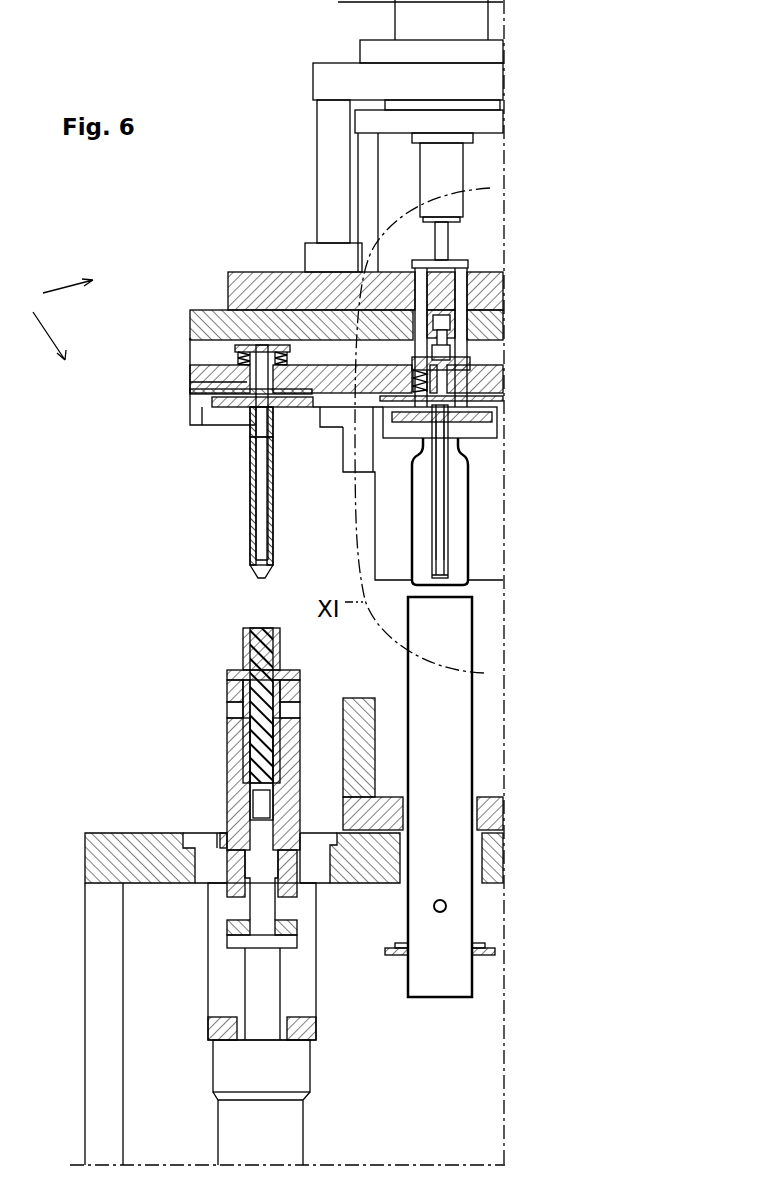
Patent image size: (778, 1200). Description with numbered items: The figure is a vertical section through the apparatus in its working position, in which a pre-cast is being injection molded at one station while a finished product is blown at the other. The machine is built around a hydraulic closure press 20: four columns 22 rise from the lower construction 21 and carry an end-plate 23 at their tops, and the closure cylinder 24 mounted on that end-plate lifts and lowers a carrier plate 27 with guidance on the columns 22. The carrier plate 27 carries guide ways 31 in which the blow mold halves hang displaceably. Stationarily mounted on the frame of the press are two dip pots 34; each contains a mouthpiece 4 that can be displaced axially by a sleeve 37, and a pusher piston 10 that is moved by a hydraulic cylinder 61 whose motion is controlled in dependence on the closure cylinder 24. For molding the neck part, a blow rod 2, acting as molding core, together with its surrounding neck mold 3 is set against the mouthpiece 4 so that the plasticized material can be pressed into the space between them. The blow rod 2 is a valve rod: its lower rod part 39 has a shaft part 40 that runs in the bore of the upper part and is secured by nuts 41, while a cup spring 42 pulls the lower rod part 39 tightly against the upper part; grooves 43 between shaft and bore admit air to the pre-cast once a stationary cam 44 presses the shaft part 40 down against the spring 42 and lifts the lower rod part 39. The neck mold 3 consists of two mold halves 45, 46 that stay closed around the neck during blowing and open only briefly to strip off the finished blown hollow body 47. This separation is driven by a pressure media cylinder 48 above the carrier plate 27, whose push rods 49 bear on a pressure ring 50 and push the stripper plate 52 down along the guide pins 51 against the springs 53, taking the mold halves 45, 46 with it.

The blow rod 2 is at (250, 512).
The neck mold 3 is at (250, 462).
The mouthpiece 4 is at (242, 647).
The pusher piston 10 is at (260, 802).
The hydraulic closure press 20 is at (54, 319).
The lower construction 21 is at (120, 837).
The columns 22 is at (328, 160).
The end-plate 23 is at (333, 80).
The closure cylinder 24 is at (415, 18).
The carrier plate 27 is at (212, 312).
The guide ways 31 is at (362, 472).
The dip pot 34 is at (227, 737).
The sleeve 37 is at (247, 768).
The lower rod part 39 is at (250, 535).
The shaft part 40 is at (247, 378).
The nuts 41 is at (253, 345).
The cup spring 42 is at (272, 345).
The grooves 43 is at (250, 416).
The stationary cam 44 is at (453, 333).
The mold half 45 is at (240, 420).
The mold half 46 is at (250, 478).
The blown hollow body 47 is at (472, 485).
The pressure media cylinder 48 is at (457, 173).
The push rods 49 is at (460, 290).
The pressure ring 50 is at (238, 347).
The guide pins 51 is at (470, 403).
The stripper plate 52 is at (215, 400).
The springs 53 is at (475, 383).
The hydraulic cylinders 61 is at (233, 1118).